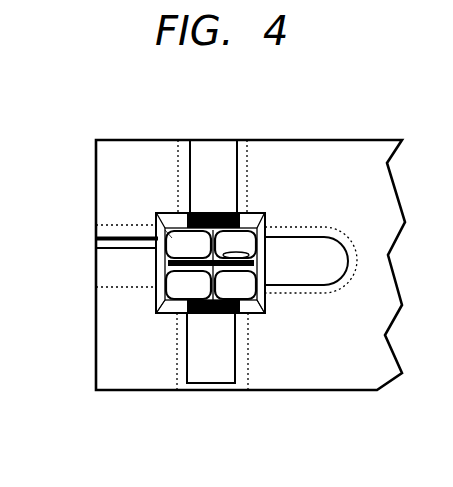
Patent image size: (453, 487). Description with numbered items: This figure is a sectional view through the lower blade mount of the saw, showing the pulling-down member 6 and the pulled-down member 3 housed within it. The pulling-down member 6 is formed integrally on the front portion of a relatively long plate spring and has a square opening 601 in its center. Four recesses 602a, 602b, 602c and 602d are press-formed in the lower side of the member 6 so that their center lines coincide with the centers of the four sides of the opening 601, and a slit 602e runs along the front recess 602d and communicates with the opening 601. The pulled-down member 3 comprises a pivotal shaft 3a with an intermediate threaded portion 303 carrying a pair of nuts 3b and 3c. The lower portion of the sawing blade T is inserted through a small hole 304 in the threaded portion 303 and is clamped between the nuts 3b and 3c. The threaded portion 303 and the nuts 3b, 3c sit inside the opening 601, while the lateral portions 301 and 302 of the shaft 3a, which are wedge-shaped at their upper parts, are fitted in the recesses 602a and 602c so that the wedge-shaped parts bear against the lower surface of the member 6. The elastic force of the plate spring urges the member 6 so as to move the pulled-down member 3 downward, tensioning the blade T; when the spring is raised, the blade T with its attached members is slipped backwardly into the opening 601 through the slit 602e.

The pulling-down member 6 is at (334, 383).
The pulled-down member 3 is at (226, 291).
The pivotal shaft 3a is at (248, 184).
The nut 3b is at (172, 230).
The nut 3c is at (157, 300).
The lateral portion 301 is at (198, 171).
The lateral portion 302 is at (223, 358).
The intermediate threaded portion 303 is at (187, 318).
The small hole 304 is at (228, 252).
The square opening 601 is at (255, 305).
The recess 602a is at (207, 390).
The recess 602b is at (322, 247).
The recess 602c is at (205, 138).
The front recess 602d is at (113, 268).
The slit 602e is at (97, 237).
The sawing blade T is at (188, 208).